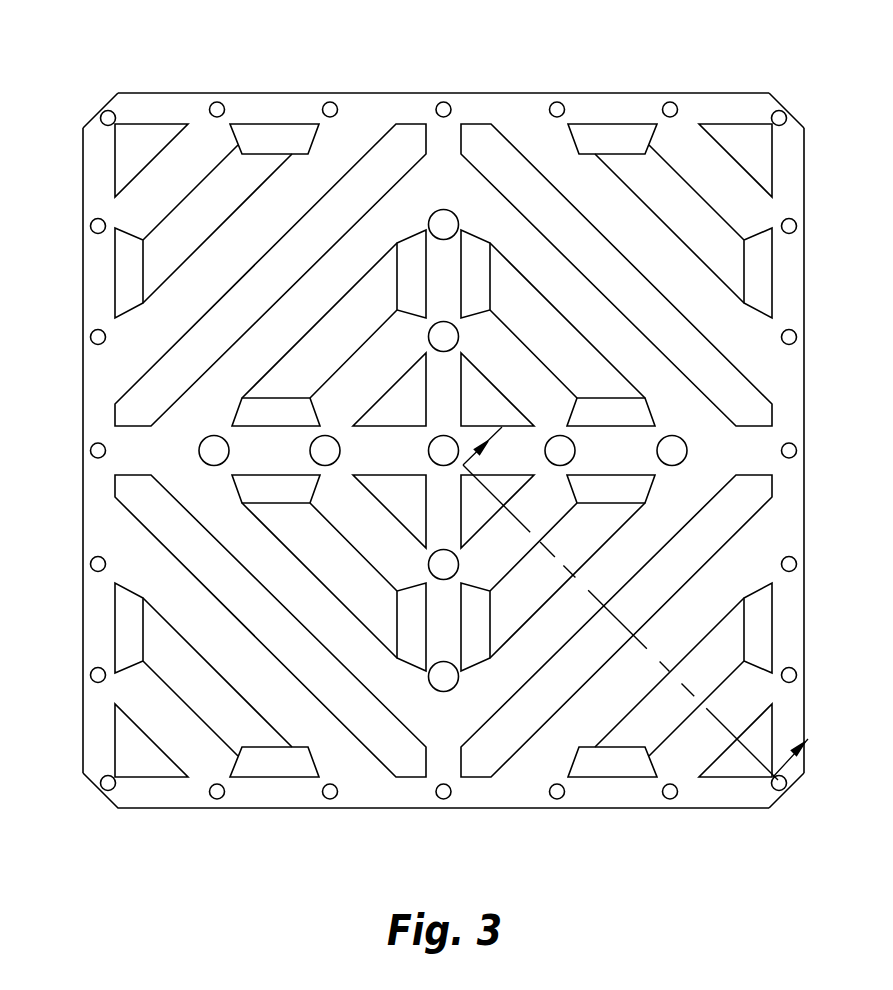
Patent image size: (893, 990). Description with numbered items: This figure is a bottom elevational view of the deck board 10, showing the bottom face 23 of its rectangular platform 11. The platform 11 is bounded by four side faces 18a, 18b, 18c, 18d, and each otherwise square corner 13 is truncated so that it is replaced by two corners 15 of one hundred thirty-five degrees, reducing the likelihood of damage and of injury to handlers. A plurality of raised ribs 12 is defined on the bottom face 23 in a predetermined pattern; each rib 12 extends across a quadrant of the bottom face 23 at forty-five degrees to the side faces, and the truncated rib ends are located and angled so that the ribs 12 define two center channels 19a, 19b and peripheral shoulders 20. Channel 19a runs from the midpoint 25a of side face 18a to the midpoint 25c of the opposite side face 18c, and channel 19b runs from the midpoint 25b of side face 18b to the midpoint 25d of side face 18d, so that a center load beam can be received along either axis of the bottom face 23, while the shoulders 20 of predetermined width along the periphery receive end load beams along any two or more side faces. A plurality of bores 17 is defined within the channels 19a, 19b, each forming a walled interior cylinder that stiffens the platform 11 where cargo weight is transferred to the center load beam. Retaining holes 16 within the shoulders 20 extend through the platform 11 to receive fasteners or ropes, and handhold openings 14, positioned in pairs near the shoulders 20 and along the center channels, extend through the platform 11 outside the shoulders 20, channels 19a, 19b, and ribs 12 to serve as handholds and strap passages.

The deck board 10 is at (442, 448).
The rectangular platform 11 is at (443, 52).
The raised ribs 12 is at (130, 507).
The corner 13 is at (110, 98).
The handhold openings 14 is at (596, 777).
The 135° corners 15 is at (797, 112).
The retaining holes 16 is at (90, 227).
The bores 17 is at (200, 447).
The side face 18a is at (83, 170).
The side face 18b is at (163, 92).
The side face 18c is at (715, 93).
The side face 18d is at (805, 185).
The center channel 19a is at (127, 462).
The center channel 19b is at (450, 148).
The shoulders 20 is at (800, 728).
The bottom face 23 is at (208, 770).
The midpoint 25a is at (85, 450).
The midpoint 25b is at (443, 93).
The midpoint 25c is at (797, 451).
The midpoint 25d is at (443, 809).